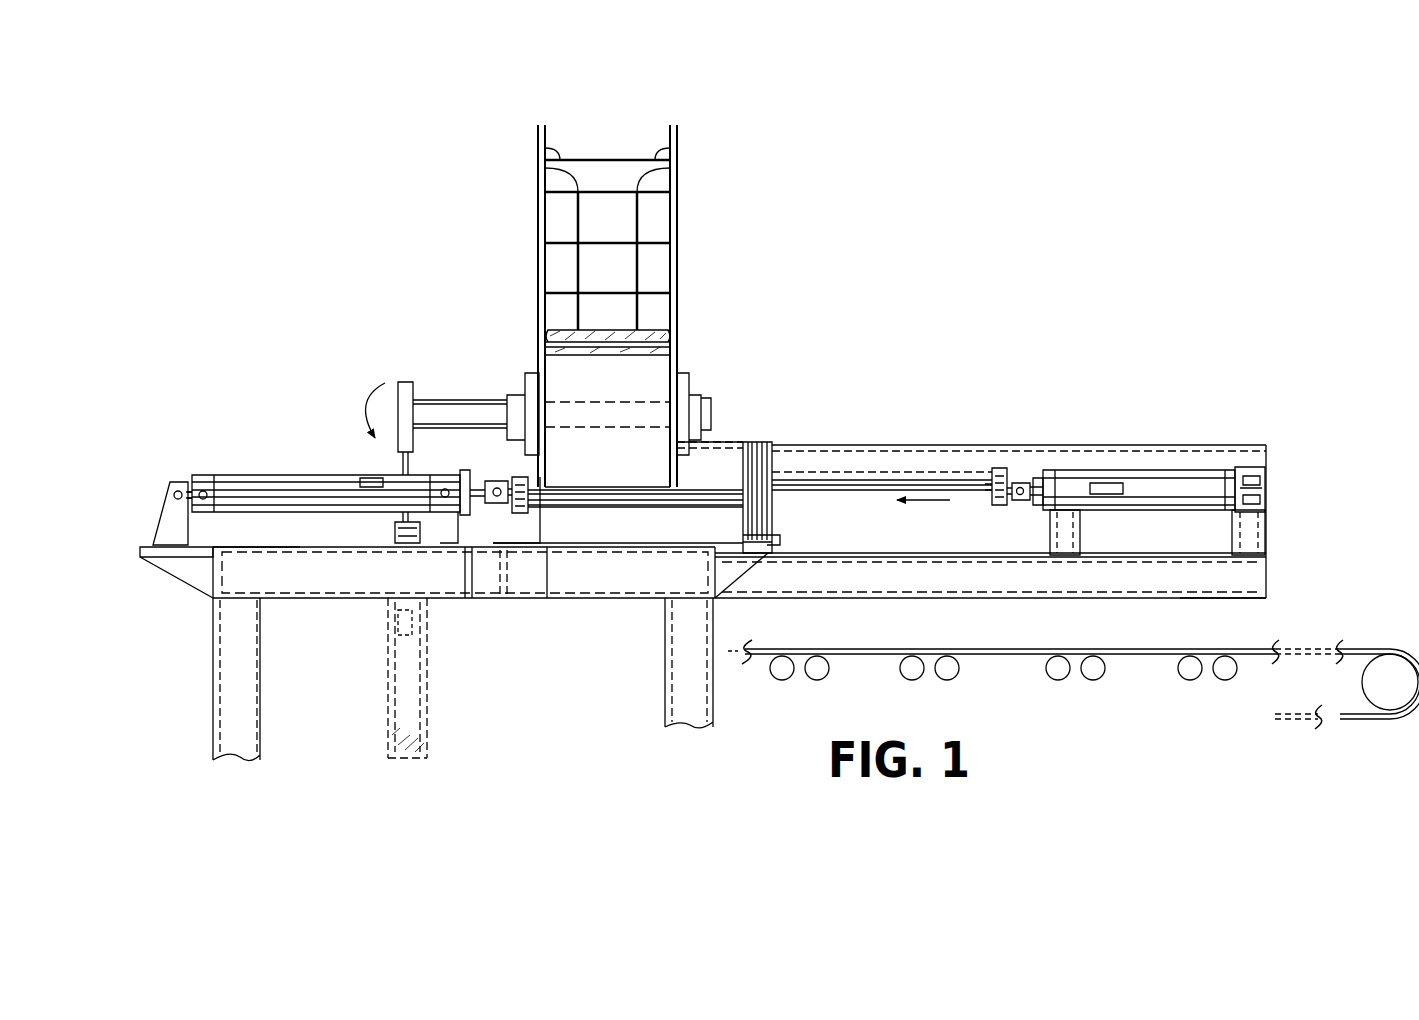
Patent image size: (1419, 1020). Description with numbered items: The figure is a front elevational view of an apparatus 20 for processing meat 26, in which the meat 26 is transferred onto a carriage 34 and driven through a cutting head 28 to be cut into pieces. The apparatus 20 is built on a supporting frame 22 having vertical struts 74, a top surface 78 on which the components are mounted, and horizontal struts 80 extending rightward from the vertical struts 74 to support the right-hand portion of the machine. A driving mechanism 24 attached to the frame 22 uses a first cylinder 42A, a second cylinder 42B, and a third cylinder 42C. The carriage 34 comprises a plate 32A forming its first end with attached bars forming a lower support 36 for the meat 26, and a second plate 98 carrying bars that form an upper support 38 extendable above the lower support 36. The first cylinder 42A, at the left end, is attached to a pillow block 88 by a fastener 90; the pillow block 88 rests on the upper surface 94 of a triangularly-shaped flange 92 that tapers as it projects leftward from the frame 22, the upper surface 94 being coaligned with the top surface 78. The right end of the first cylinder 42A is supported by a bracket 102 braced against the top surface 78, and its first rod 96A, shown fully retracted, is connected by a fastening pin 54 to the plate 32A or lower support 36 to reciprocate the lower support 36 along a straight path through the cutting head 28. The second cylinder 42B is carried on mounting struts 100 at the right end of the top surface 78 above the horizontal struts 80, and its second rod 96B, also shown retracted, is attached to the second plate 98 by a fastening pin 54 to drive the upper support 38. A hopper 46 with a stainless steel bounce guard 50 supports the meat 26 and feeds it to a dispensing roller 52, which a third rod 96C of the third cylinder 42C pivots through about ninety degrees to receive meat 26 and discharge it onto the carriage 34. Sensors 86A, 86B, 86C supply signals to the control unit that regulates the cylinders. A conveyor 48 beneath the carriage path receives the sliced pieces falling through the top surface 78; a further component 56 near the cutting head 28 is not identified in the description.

The apparatus for processing meat 20 is at (970, 346).
The supporting frame 22 is at (208, 672).
The driving mechanism 24 is at (287, 483).
The meat 26 is at (562, 331).
The cutting head 28 is at (767, 438).
The plate 32A is at (524, 515).
The carriage 34 is at (556, 474).
The lower support 36 is at (637, 508).
The upper support 38 is at (843, 486).
The first cylinder 42A is at (252, 473).
The second cylinder 42B is at (1143, 480).
The third cylinder 42C is at (408, 683).
The hopper 46 is at (540, 243).
The conveyor 48 is at (822, 648).
The bounce guard 50 is at (597, 245).
The dispensing roller 52 is at (547, 447).
The fastening pin 54 is at (496, 488).
The gusset 56 is at (767, 540).
The vertical struts 74 is at (243, 638).
The top surface 78 is at (295, 547).
The horizontal struts 80 is at (1257, 573).
The sensor 86A is at (368, 480).
The sensor 86B is at (1098, 483).
The sensor 86C is at (388, 642).
The pillow block 88 is at (170, 522).
The fastener 90 is at (188, 482).
The triangularly-shaped flange 92 is at (182, 568).
The upper surface 94 is at (198, 546).
The first rod 96A is at (515, 478).
The second rod 96B is at (1003, 473).
The third rod 96C is at (393, 552).
The second plate 98 is at (993, 467).
The mounting struts 100 is at (1057, 530).
The bracket 102 is at (457, 527).